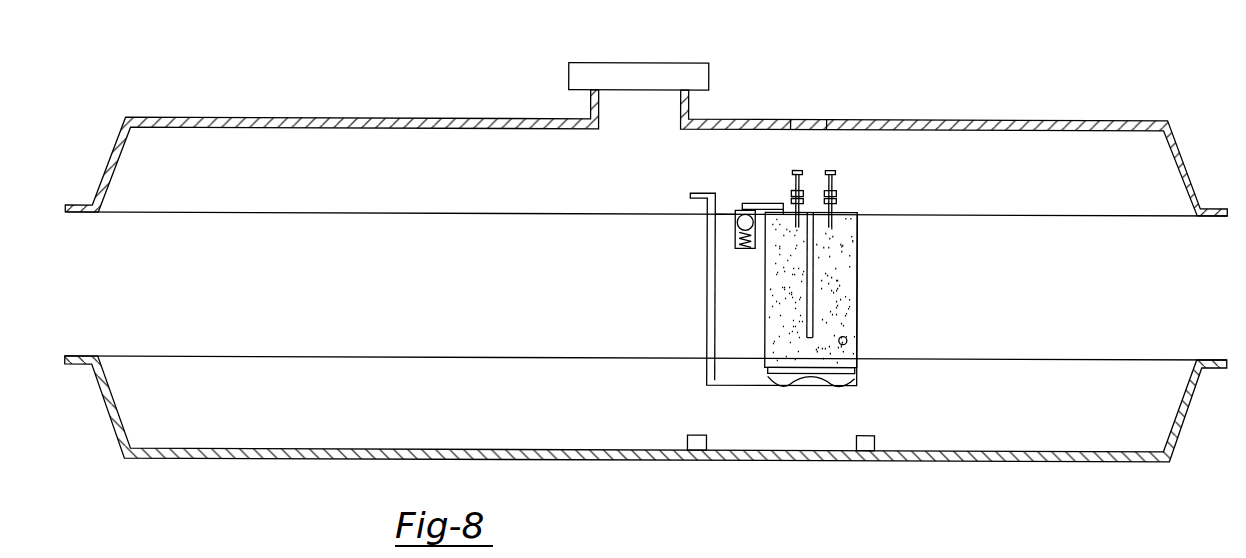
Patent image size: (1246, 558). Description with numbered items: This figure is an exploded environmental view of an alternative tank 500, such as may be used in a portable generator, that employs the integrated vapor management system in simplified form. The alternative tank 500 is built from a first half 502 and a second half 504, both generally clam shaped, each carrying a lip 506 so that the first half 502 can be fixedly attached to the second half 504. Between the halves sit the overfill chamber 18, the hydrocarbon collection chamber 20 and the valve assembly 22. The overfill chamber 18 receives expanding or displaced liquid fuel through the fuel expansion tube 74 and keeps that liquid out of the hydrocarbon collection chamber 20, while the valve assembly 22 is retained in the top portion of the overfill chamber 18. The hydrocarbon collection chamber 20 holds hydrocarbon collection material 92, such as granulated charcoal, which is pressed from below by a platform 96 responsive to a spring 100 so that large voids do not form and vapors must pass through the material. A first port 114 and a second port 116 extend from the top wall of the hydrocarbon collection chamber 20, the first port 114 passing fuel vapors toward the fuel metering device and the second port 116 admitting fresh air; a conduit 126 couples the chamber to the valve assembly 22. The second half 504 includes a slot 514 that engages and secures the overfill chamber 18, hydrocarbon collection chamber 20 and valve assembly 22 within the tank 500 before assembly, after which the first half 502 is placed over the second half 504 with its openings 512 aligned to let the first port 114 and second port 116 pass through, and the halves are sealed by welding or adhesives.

The alternative tank 500 is at (1134, 54).
The first half 502 is at (306, 116).
The second half 504 is at (220, 462).
The lip 506 is at (76, 217).
The openings 512 is at (796, 119).
The slot 514 is at (699, 452).
The overfill chamber 18 is at (709, 306).
The hydrocarbon collection chamber 20 is at (860, 287).
The valve assembly 22 is at (736, 208).
The fuel expansion tube 74 is at (700, 192).
The hydrocarbon collection material 92 is at (850, 338).
The platform 96 is at (859, 370).
The spring 100 is at (855, 384).
The first port 114 is at (801, 178).
The second port 116 is at (835, 192).
The conduit 126 is at (752, 202).